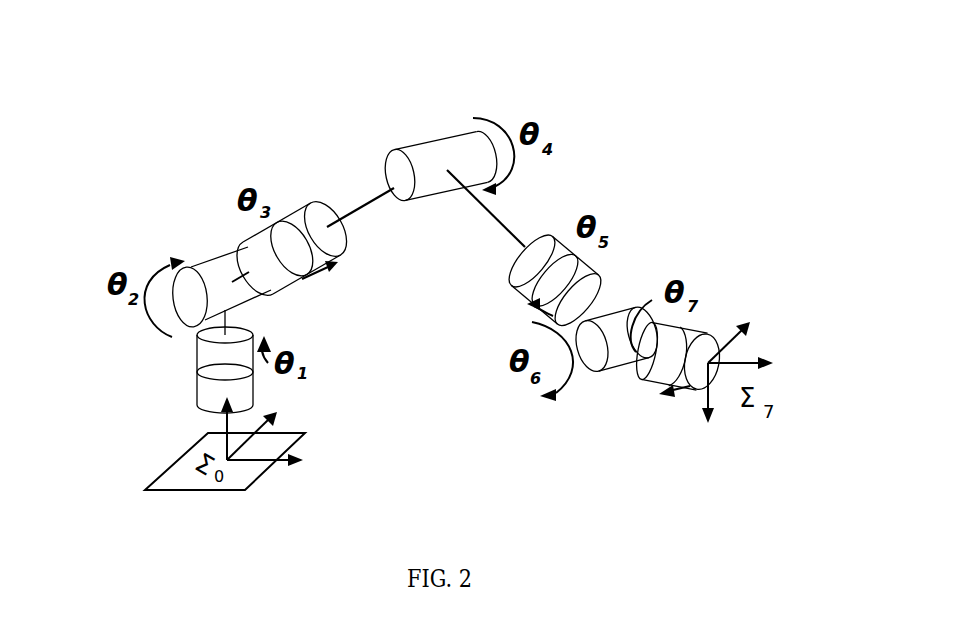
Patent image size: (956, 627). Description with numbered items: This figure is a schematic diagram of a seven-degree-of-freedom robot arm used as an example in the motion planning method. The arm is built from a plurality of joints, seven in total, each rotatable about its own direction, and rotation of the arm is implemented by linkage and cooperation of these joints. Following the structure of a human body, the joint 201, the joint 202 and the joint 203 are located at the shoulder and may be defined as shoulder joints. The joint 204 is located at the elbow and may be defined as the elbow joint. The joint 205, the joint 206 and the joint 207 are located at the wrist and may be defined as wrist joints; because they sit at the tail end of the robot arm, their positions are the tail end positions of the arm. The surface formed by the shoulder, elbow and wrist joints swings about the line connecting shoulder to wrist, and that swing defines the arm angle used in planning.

The joint 201 is at (252, 368).
The joint 202 is at (213, 275).
The joint 203 is at (322, 232).
The joint 204 is at (445, 137).
The joint 205 is at (565, 288).
The joint 206 is at (627, 330).
The joint 207 is at (692, 350).